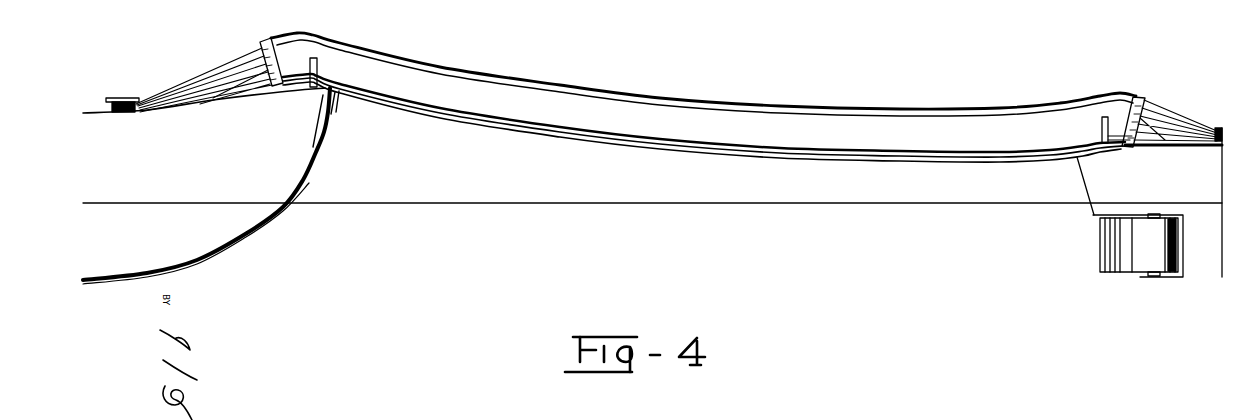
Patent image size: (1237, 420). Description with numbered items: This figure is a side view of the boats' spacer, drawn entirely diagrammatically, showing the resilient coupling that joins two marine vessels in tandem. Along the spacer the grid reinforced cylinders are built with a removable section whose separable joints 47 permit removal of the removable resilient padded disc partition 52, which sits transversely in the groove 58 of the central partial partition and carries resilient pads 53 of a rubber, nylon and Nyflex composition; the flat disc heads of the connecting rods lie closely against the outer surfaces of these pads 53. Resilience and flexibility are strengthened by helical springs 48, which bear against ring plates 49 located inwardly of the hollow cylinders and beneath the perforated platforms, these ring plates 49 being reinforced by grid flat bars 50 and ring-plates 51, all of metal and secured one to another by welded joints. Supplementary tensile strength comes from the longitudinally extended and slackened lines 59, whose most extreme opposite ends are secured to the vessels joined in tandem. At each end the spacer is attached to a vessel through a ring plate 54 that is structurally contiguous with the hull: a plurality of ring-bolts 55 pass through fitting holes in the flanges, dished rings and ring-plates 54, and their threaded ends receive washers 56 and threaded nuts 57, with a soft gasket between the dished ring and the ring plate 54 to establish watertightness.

The separable joints 47 is at (647, 103).
The helical springs 48 is at (190, 78).
The ring plates 49 is at (1087, 180).
The grid flat bars 50 is at (1216, 128).
The ring-plates 51 is at (1088, 152).
The removable resilient padded disc partition 52 is at (290, 162).
The resilient pads 53 is at (122, 98).
The ring plate 54 is at (320, 91).
The ring-bolts 55 is at (213, 98).
The washers 56 is at (318, 70).
The threaded nuts 57 is at (1101, 125).
The groove 58 is at (1167, 113).
The slackened lines 59 is at (1147, 137).